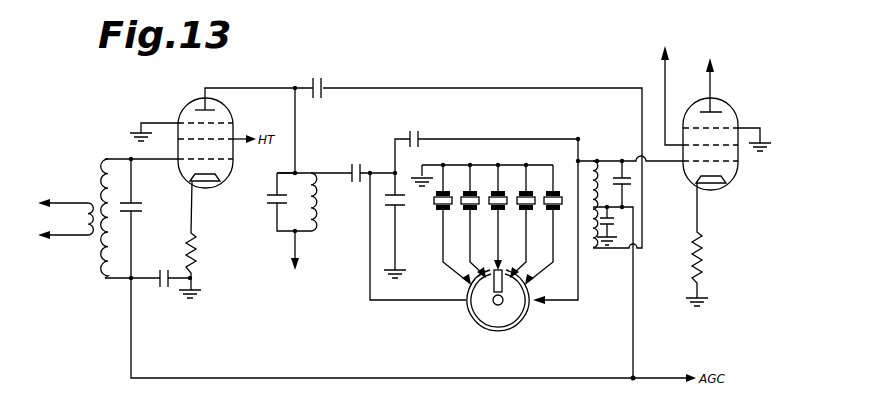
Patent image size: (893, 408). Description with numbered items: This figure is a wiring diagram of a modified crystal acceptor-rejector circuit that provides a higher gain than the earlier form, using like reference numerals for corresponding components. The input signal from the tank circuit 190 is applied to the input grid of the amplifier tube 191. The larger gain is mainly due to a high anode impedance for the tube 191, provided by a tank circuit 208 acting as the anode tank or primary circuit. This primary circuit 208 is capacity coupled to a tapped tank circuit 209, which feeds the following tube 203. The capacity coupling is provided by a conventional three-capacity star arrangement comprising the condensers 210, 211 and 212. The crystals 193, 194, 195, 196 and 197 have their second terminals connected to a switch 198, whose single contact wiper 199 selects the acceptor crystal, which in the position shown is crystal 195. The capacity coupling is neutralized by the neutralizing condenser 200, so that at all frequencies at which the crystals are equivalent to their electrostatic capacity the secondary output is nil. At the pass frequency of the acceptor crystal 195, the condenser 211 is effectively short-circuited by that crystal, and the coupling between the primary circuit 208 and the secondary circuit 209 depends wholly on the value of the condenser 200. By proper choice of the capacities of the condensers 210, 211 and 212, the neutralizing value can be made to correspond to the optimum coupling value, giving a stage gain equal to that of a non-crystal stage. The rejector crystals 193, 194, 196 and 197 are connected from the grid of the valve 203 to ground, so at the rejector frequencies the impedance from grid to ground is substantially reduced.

The tank circuit 190 is at (97, 224).
The amplifier tube 191 is at (188, 133).
The crystal 193 is at (447, 190).
The crystal 194 is at (468, 190).
The crystal 195 is at (498, 190).
The crystal 196 is at (523, 190).
The crystal 197 is at (556, 190).
The switch 198 is at (478, 330).
The single contact wiper 199 is at (503, 304).
The neutralizing condenser 200 is at (324, 85).
The following tube 203 is at (738, 110).
The tank circuit 208 is at (290, 235).
The tapped tank circuit 209 is at (593, 250).
The condenser 210 is at (356, 160).
The condenser 211 is at (393, 200).
The condenser 212 is at (415, 136).